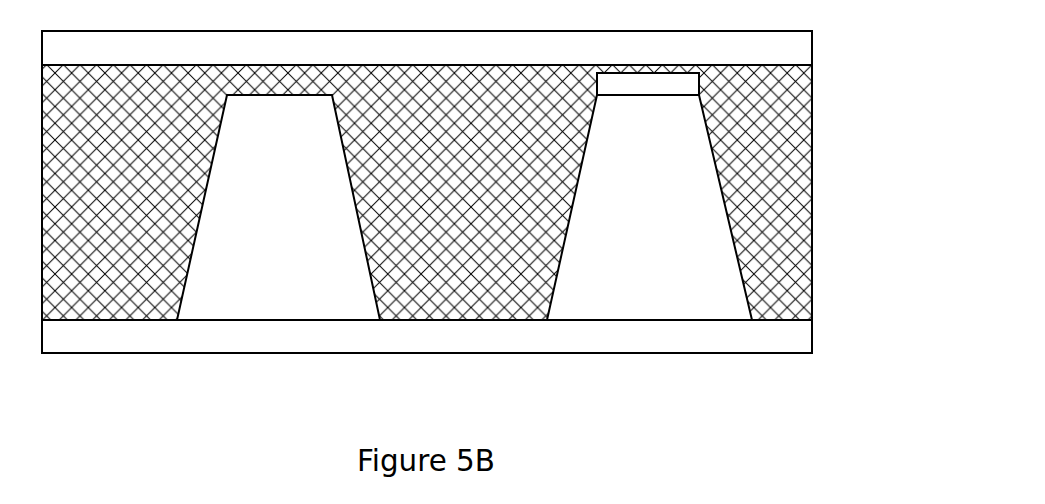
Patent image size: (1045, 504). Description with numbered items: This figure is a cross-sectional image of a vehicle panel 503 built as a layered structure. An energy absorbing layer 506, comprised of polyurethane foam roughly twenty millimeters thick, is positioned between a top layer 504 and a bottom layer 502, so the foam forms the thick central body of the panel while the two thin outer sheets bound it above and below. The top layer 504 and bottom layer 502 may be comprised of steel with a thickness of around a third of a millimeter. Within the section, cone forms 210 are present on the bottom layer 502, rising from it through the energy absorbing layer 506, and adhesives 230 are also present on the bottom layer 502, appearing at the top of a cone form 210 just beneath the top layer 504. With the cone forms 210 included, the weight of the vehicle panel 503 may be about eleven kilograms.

The vehicle panel 503 is at (445, 417).
The energy absorbing layer 506 is at (812, 195).
The top layer 504 is at (812, 48).
The bottom layer 502 is at (812, 335).
The cone forms 210 is at (719, 178).
The adhesives 230 is at (700, 83).